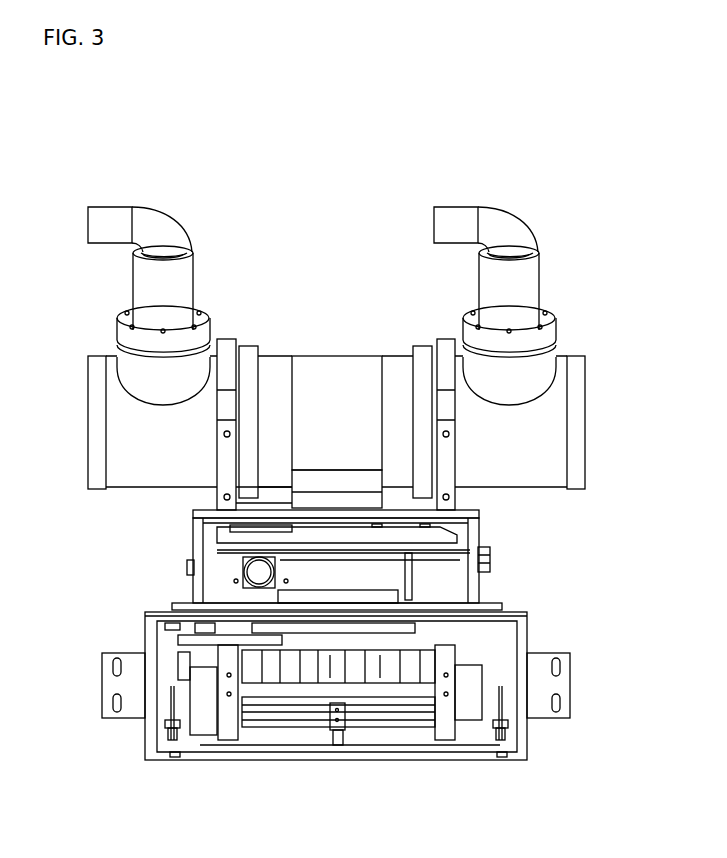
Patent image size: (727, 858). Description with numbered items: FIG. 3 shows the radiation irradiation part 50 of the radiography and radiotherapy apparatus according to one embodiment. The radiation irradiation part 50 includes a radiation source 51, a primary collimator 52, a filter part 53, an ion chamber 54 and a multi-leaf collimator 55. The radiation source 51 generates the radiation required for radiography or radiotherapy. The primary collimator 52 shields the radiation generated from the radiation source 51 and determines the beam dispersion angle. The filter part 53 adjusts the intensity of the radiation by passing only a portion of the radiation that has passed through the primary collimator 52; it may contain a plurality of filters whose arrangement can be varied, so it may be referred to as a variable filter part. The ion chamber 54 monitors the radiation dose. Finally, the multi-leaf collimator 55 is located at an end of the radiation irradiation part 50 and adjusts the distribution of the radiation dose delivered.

The radiation irradiation part 50 is at (104, 143).
The radiation source 51 is at (542, 422).
The primary collimator 52 is at (342, 498).
The filter part 53 is at (453, 540).
The ion chamber 54 is at (302, 561).
The multi-leaf collimator 55 is at (358, 686).